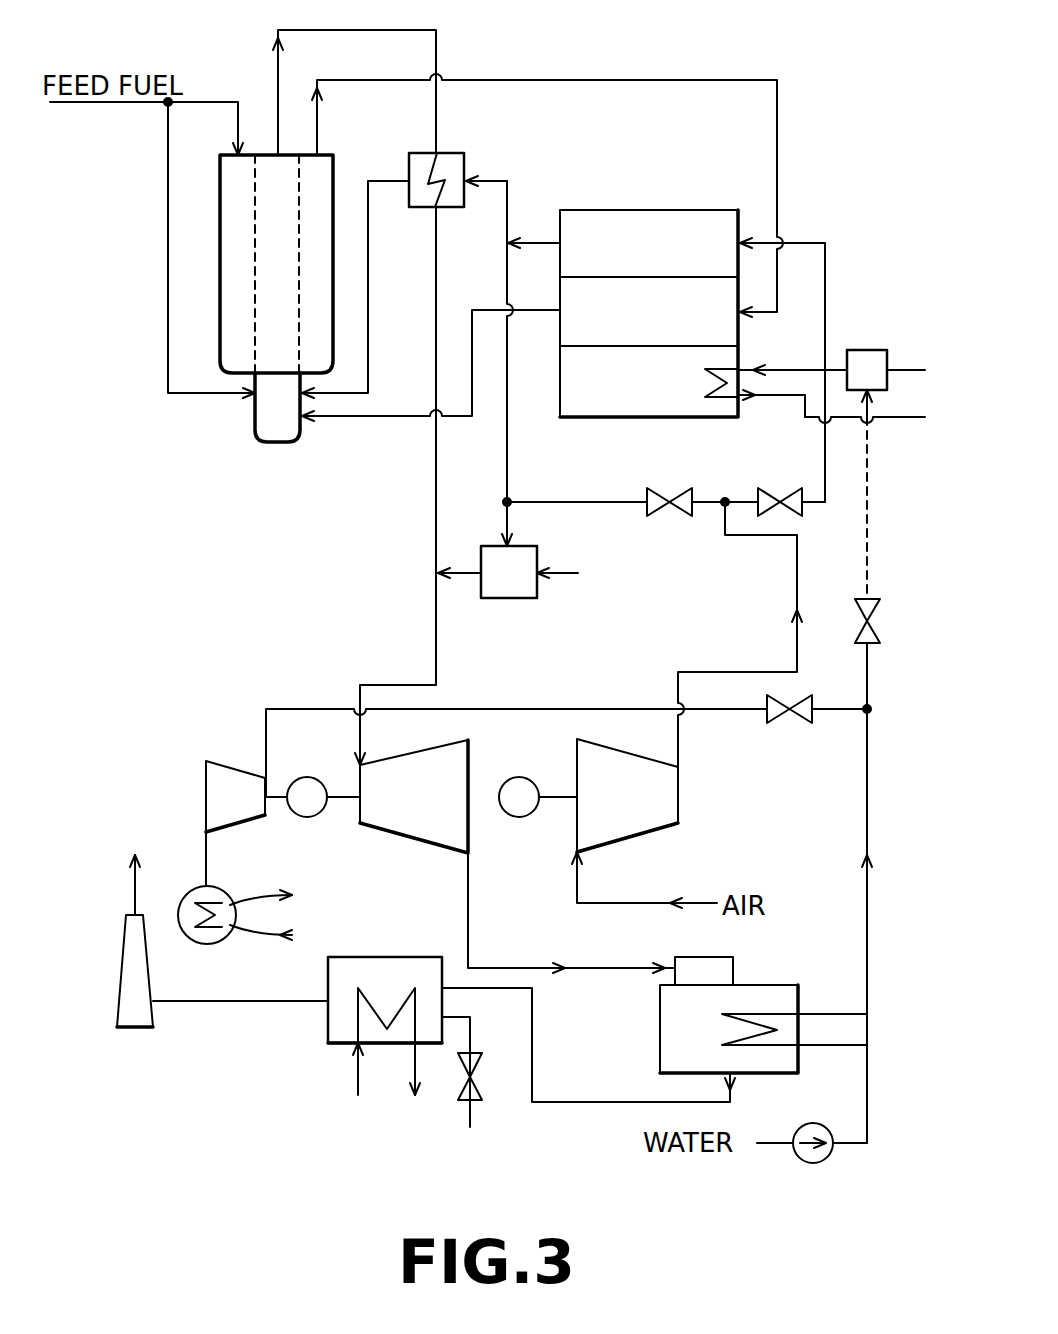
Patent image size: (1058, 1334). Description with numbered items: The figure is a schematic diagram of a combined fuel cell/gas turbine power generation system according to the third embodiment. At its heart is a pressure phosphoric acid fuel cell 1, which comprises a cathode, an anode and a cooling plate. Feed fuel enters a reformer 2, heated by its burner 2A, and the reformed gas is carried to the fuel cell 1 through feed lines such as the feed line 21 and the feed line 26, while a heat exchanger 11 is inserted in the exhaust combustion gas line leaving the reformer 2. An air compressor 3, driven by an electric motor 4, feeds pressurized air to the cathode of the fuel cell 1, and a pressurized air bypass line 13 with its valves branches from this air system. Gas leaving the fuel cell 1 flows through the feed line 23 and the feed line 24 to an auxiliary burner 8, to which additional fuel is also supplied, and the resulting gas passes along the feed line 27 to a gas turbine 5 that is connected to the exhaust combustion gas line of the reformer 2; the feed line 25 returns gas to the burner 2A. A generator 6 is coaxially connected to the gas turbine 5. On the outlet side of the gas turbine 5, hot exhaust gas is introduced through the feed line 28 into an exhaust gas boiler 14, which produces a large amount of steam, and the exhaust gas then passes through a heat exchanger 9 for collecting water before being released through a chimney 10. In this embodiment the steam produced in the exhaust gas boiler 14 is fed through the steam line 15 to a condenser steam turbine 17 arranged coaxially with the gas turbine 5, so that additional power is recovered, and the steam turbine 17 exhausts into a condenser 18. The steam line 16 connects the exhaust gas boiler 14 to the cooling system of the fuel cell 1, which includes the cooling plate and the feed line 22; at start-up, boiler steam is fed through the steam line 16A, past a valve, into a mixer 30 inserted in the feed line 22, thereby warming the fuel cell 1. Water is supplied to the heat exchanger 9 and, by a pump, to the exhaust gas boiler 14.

The pressure phosphoric acid fuel cell 1 is at (686, 208).
The reformer 2 is at (218, 248).
The burner 2A is at (255, 432).
The air compressor 3 is at (630, 832).
The electric motor 4 is at (507, 817).
The gas turbine 5 is at (405, 835).
The generator 6 is at (293, 817).
The auxiliary burner 8 is at (497, 598).
The heat exchanger for collecting water 9 is at (385, 957).
The chimney 10 is at (143, 1027).
The heat exchanger 11 is at (445, 153).
The pressurized air bypass line 13 is at (721, 500).
The exhaust gas boiler 14 is at (660, 1040).
The steam line 15 is at (720, 712).
The steam line 16 is at (866, 790).
The steam line 16A is at (868, 500).
The condenser steam turbine 17 is at (222, 762).
The condenser 18 is at (193, 937).
The feed line 21 is at (682, 80).
The feed line 22 is at (790, 370).
The feed line 23 is at (510, 202).
The feed line 24 is at (508, 385).
The feed line 25 is at (391, 414).
The feed line 26 is at (437, 50).
The feed line 27 is at (464, 567).
The feed line 28 is at (470, 946).
The mixer 30 is at (862, 350).